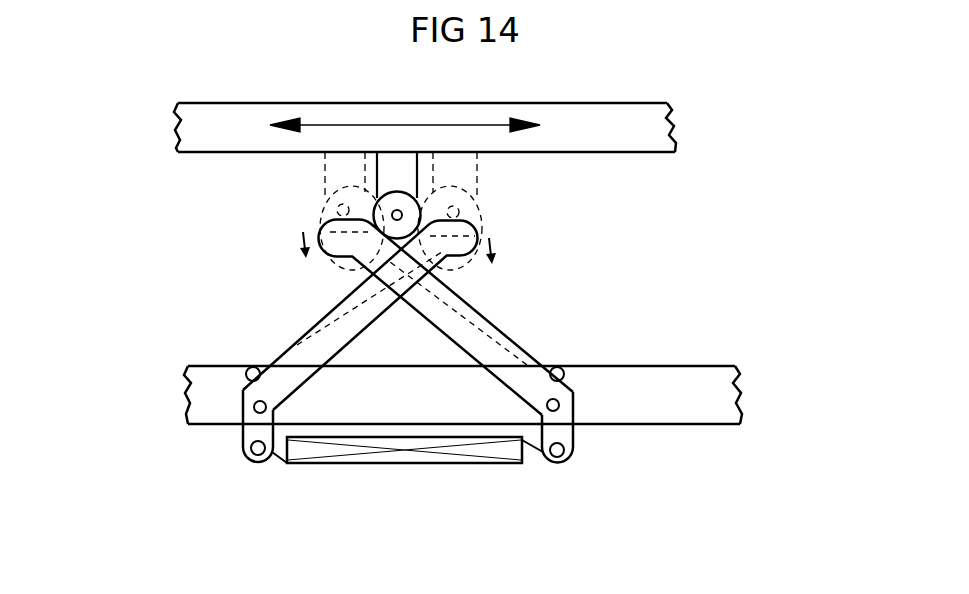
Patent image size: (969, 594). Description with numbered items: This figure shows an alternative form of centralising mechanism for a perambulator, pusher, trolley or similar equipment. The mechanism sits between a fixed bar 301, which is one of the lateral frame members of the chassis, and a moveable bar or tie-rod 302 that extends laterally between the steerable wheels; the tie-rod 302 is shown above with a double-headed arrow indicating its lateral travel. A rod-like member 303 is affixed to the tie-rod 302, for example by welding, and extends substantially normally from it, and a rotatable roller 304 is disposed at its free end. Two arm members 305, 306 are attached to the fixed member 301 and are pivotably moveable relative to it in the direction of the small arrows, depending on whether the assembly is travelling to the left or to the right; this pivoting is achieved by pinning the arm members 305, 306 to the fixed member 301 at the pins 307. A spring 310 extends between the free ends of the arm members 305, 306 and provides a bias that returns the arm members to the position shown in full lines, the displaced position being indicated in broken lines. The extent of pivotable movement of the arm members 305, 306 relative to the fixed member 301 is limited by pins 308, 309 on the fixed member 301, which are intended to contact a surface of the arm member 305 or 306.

The fixed bar 301 is at (688, 413).
The moveable bar or tie-rod 302 is at (207, 137).
The member 303 is at (383, 172).
The roller 304 is at (410, 199).
The arm member 305 is at (308, 332).
The arm member 306 is at (487, 328).
The pin 307 is at (574, 437).
The pin 308 is at (250, 372).
The pin 309 is at (565, 367).
The spring 310 is at (396, 464).